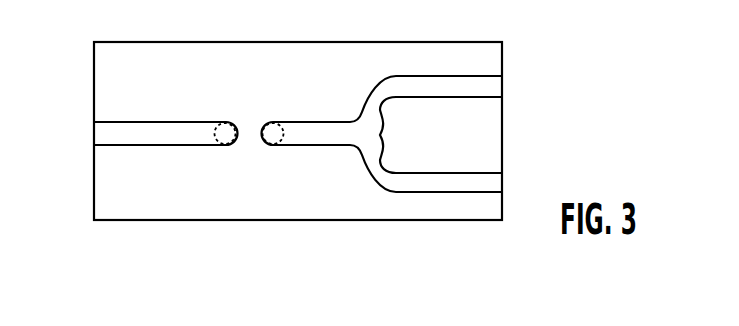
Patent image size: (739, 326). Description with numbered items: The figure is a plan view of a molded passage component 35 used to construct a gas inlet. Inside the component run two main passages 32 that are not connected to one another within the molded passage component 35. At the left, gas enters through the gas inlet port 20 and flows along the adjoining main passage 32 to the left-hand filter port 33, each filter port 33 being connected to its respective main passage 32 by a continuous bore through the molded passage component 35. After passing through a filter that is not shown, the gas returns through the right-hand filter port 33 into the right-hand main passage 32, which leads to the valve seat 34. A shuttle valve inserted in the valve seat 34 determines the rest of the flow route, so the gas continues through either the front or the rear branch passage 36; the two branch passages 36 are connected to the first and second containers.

The gas inlet port 20 is at (78, 135).
The main passage 32 is at (133, 137).
The filter port 33 is at (275, 127).
The valve seat 34 is at (373, 137).
The molded passage component 35 is at (172, 222).
The branch passage 36 is at (462, 86).